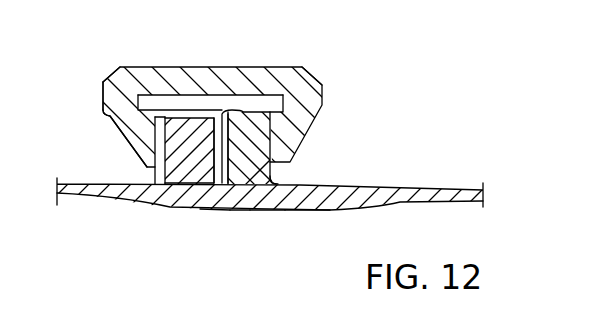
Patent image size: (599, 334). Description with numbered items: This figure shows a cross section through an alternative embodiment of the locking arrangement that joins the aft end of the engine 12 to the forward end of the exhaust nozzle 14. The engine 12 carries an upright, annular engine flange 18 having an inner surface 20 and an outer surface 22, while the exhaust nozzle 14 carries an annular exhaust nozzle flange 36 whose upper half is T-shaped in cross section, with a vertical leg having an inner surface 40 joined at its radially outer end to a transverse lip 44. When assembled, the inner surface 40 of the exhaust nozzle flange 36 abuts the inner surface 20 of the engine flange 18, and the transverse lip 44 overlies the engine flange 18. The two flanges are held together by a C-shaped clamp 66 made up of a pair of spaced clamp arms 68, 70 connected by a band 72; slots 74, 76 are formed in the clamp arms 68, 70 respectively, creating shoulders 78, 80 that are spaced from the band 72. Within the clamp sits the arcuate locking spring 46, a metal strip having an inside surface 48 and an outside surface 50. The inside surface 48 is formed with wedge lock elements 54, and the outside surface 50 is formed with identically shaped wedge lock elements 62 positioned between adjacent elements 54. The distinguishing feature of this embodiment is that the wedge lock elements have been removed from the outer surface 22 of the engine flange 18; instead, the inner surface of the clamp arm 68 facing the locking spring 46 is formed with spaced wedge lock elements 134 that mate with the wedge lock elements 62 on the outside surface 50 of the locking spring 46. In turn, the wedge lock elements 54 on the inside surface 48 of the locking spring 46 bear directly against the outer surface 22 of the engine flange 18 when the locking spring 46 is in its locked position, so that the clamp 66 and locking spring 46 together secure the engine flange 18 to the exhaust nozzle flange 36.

The engine 12 is at (92, 211).
The exhaust nozzle 14 is at (472, 170).
The engine flange 18 is at (224, 215).
The inner surface 20 is at (287, 211).
The outer surface 22 is at (236, 210).
The exhaust nozzle flange 36 is at (276, 180).
The inner surface 40 is at (268, 210).
The transverse lip 44 is at (231, 98).
The locking spring 46 is at (189, 127).
The inside surface 48 is at (156, 110).
The outside surface 50 is at (232, 110).
The wedge lock elements 54 is at (242, 141).
The wedge lock elements 62 is at (165, 184).
The C-shaped clamp 66 is at (337, 81).
The clamp arm 68 is at (100, 90).
The clamp arm 70 is at (325, 100).
The band 72 is at (150, 78).
The slot 74 is at (133, 67).
The slot 76 is at (287, 67).
The shoulder 78 is at (110, 117).
The shoulder 80 is at (280, 128).
The wedge lock elements 134 is at (156, 184).